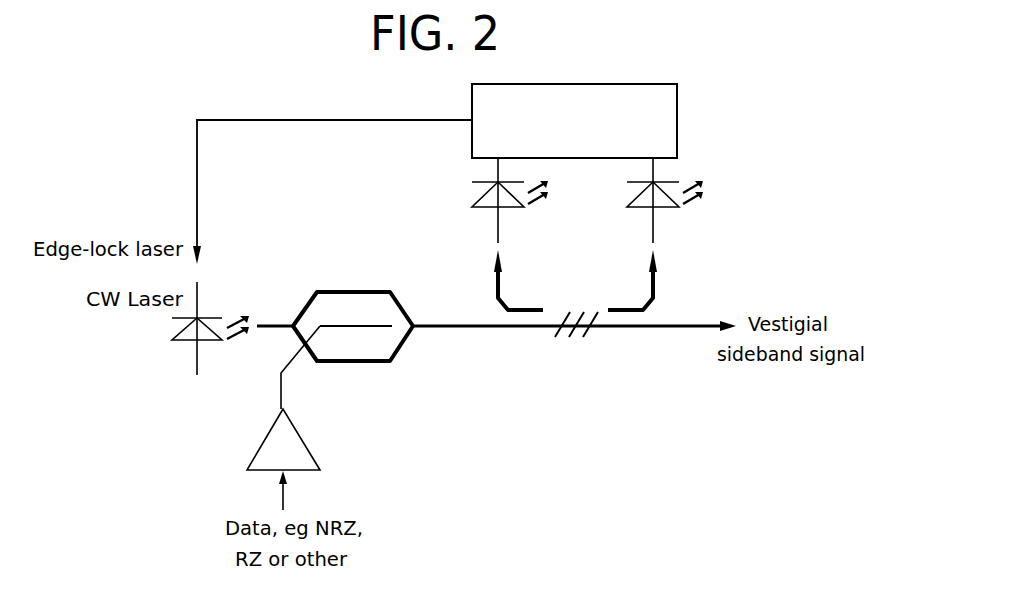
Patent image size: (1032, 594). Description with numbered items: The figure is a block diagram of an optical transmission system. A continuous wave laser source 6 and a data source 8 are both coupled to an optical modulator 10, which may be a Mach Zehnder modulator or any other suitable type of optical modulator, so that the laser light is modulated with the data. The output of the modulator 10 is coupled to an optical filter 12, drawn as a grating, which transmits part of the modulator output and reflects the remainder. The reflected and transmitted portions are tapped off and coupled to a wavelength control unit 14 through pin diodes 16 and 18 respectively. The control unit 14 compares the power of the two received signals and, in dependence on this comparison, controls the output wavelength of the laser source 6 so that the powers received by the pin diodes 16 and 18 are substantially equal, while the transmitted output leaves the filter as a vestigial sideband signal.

The continuous wave laser source 6 is at (191, 340).
The data source 8 is at (266, 438).
The optical modulator 10 is at (355, 362).
The optical filter 12 is at (549, 331).
The wavelength control unit 14 is at (677, 123).
The pin diode 16 is at (489, 208).
The pin diode 18 is at (664, 209).